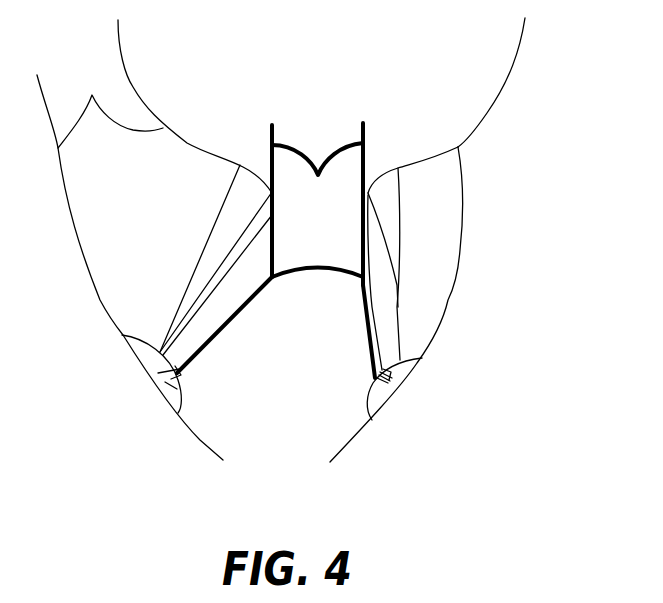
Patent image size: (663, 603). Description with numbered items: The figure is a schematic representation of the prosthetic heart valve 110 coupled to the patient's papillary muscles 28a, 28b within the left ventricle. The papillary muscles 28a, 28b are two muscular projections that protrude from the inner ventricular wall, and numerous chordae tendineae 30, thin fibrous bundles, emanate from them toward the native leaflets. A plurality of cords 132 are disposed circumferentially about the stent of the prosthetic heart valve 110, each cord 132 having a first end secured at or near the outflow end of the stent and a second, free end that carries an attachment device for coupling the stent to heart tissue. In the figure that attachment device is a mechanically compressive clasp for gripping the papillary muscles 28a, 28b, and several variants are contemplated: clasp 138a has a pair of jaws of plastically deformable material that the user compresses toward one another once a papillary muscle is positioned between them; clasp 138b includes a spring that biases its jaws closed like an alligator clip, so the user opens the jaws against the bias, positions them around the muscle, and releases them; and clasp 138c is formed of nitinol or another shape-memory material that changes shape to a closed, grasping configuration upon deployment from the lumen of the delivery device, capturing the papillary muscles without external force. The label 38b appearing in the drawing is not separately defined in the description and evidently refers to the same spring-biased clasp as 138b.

The prosthetic heart valve 110 is at (365, 161).
The cord 132 is at (210, 343).
The chordae tendineae 30 is at (395, 247).
The papillary muscle 28a is at (147, 360).
The papillary muscle 28b is at (381, 405).
The clasp 138a is at (172, 393).
The clasp 138b is at (384, 377).
The clasp 138c is at (378, 388).
The anchoring hook (as labeled) 38b is at (384, 378).